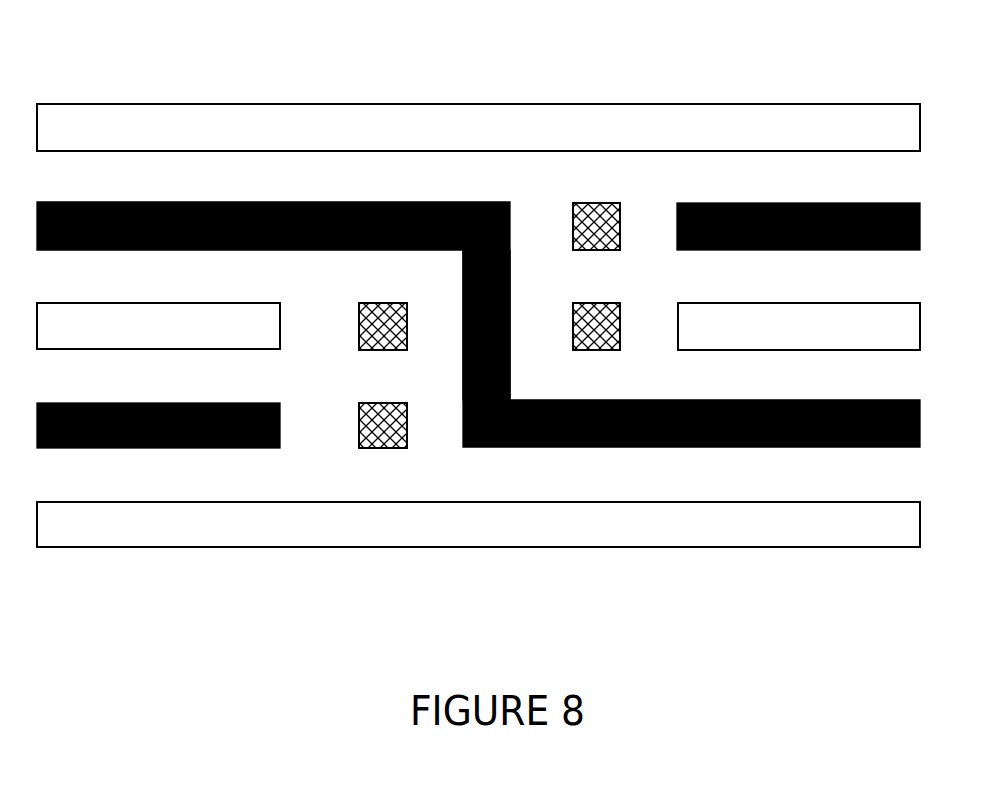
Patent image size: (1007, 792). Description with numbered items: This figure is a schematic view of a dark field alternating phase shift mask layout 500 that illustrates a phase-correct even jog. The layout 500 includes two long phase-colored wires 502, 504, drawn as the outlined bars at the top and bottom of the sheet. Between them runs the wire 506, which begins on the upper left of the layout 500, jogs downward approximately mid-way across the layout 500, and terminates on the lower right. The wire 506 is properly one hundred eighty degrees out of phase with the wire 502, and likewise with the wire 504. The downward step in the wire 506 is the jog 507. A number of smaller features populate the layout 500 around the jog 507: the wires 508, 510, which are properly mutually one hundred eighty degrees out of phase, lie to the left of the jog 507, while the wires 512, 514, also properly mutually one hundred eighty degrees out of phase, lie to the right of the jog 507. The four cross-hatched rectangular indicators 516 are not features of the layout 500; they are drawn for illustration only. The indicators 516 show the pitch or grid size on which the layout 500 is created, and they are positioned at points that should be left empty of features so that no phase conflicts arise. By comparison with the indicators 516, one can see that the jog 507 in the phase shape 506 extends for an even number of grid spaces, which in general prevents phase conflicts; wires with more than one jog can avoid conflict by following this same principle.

The dark field AltPSM layout 500 is at (852, 82).
The phase-colored wire 502 is at (513, 143).
The phase-colored wire 504 is at (483, 522).
The wire 506 is at (255, 202).
The jog 507 is at (463, 297).
The wire 508 is at (158, 322).
The wire 510 is at (222, 448).
The wire 512 is at (798, 203).
The wire 514 is at (802, 328).
The rectangular indicator 516 is at (398, 312).